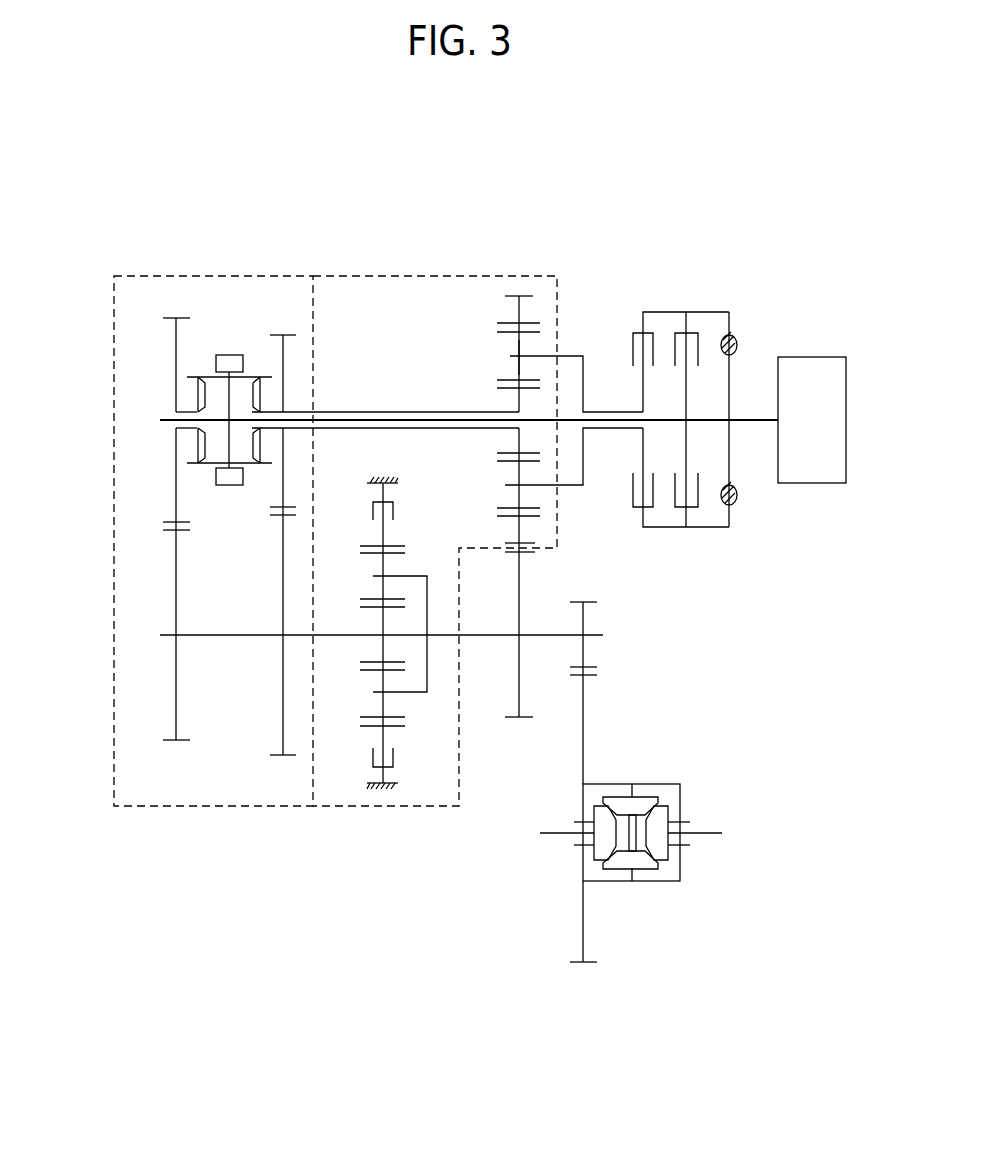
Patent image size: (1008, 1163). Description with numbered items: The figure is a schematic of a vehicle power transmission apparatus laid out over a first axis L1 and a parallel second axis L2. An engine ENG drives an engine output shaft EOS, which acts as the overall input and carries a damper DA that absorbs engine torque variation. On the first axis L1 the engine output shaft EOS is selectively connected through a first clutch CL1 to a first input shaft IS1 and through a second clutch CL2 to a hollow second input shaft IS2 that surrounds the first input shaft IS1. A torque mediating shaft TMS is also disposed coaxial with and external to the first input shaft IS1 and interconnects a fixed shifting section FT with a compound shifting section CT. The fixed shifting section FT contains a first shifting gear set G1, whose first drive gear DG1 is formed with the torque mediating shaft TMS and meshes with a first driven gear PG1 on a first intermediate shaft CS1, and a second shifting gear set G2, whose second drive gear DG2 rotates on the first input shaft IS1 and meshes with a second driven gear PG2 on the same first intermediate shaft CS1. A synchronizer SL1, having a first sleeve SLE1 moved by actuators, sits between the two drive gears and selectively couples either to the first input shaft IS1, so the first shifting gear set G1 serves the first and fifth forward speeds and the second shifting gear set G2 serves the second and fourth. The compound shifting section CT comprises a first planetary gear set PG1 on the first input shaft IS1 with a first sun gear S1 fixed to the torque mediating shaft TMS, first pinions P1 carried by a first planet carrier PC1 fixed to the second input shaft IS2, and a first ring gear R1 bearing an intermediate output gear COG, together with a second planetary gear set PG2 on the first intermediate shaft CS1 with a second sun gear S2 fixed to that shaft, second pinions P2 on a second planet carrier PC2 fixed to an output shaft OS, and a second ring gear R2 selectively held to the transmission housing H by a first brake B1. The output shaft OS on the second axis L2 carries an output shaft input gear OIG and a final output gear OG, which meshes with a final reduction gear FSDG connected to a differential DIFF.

The fixed shifting section FT is at (154, 270).
The compound shifting section CT is at (462, 270).
The second drive gear DG2 is at (178, 342).
The first drive gear DG1 is at (283, 354).
The synchronizer SL1 is at (236, 348).
The first sleeve SLE1 is at (232, 487).
The torque mediating shaft TMS is at (406, 412).
The first axis L1 is at (160, 420).
The second axis L2 is at (160, 635).
The second shifting gear set G2 is at (289, 589).
The first shifting gear set G1 is at (431, 549).
The second planetary gear set PG2 is at (176, 687).
The first planetary gear set PG1 is at (431, 483).
The first intermediate shaft CS1 is at (225, 638).
The first ring gear R1 is at (505, 322).
The first pinions P1 is at (512, 353).
The first sun gear S1 is at (505, 389).
The first planet carrier PC1 is at (571, 355).
The first input shaft IS1 is at (475, 430).
The second input shaft IS2 is at (605, 410).
The output shaft input gear OIG is at (519, 573).
The intermediate output gear COG is at (537, 543).
The transmission housing H is at (383, 483).
The second ring gear R2 is at (370, 546).
The second pinions P2 is at (383, 576).
The second sun gear S2 is at (370, 603).
The second planet carrier PC2 is at (428, 610).
The first brake B1 is at (360, 774).
The output shaft OS is at (543, 632).
The final output gear OG is at (585, 613).
The final reduction gear FSDG is at (583, 722).
The differential DIFF is at (682, 797).
The second clutch CL2 is at (652, 325).
The first clutch CL1 is at (694, 325).
The damper DA is at (742, 330).
The engine output shaft EOS is at (752, 425).
The engine ENG is at (812, 420).